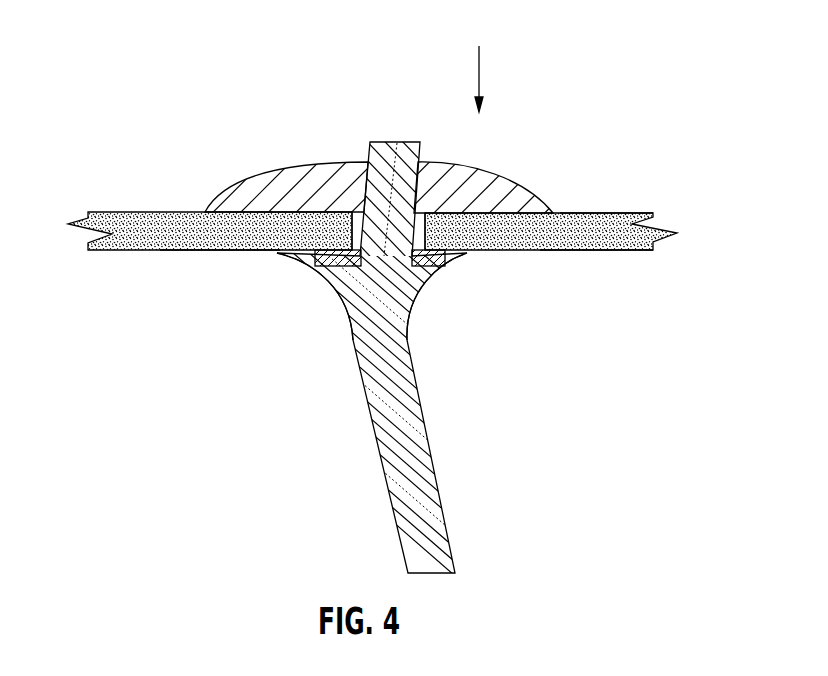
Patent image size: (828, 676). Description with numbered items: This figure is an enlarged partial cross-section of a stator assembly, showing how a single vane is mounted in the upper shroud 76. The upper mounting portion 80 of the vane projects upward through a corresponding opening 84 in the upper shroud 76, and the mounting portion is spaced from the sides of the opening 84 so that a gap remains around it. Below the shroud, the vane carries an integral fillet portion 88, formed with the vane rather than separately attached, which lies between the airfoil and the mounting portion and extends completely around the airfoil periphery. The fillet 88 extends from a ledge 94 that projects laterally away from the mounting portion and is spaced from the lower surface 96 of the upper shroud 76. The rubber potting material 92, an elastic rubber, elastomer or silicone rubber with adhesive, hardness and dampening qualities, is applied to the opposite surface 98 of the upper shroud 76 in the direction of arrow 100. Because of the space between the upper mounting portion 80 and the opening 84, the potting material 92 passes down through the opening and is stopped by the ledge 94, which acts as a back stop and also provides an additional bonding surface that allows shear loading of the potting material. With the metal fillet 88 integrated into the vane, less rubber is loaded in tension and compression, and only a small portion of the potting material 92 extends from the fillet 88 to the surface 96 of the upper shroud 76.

The upper shroud 76 is at (629, 222).
The upper mounting portion 80 is at (394, 142).
The opening 84 is at (363, 232).
The integral fillet portion 88 is at (327, 277).
The rubber potting material 92 is at (487, 188).
The ledge 94 is at (313, 256).
The surface of the upper shroud 96 is at (203, 251).
The surface of the upper shroud 98 is at (588, 211).
The arrow 100 is at (481, 80).